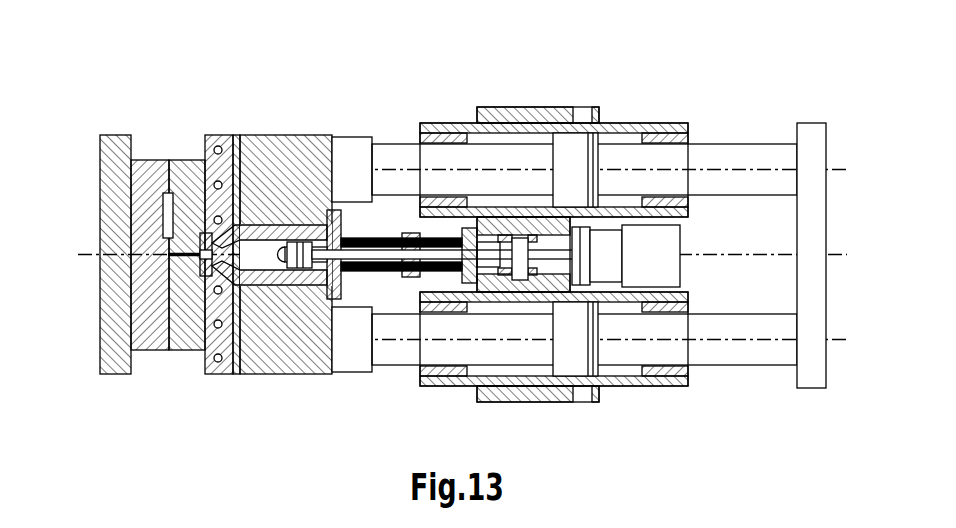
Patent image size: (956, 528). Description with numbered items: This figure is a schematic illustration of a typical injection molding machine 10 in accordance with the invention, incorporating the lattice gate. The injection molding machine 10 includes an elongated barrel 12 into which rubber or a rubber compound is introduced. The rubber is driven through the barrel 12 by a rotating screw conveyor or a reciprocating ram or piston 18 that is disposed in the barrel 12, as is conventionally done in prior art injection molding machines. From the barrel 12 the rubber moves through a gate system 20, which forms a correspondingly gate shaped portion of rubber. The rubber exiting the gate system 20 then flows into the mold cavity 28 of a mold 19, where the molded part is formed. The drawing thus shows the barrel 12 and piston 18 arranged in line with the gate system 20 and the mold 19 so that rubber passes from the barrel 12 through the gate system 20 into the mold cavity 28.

The injection molding machine 10 is at (180, 86).
The elongated barrel 12 is at (261, 290).
The reciprocating ram or piston 18 is at (377, 240).
The mold 19 is at (150, 167).
The gate system 20 is at (168, 245).
The mold cavity 28 is at (167, 212).